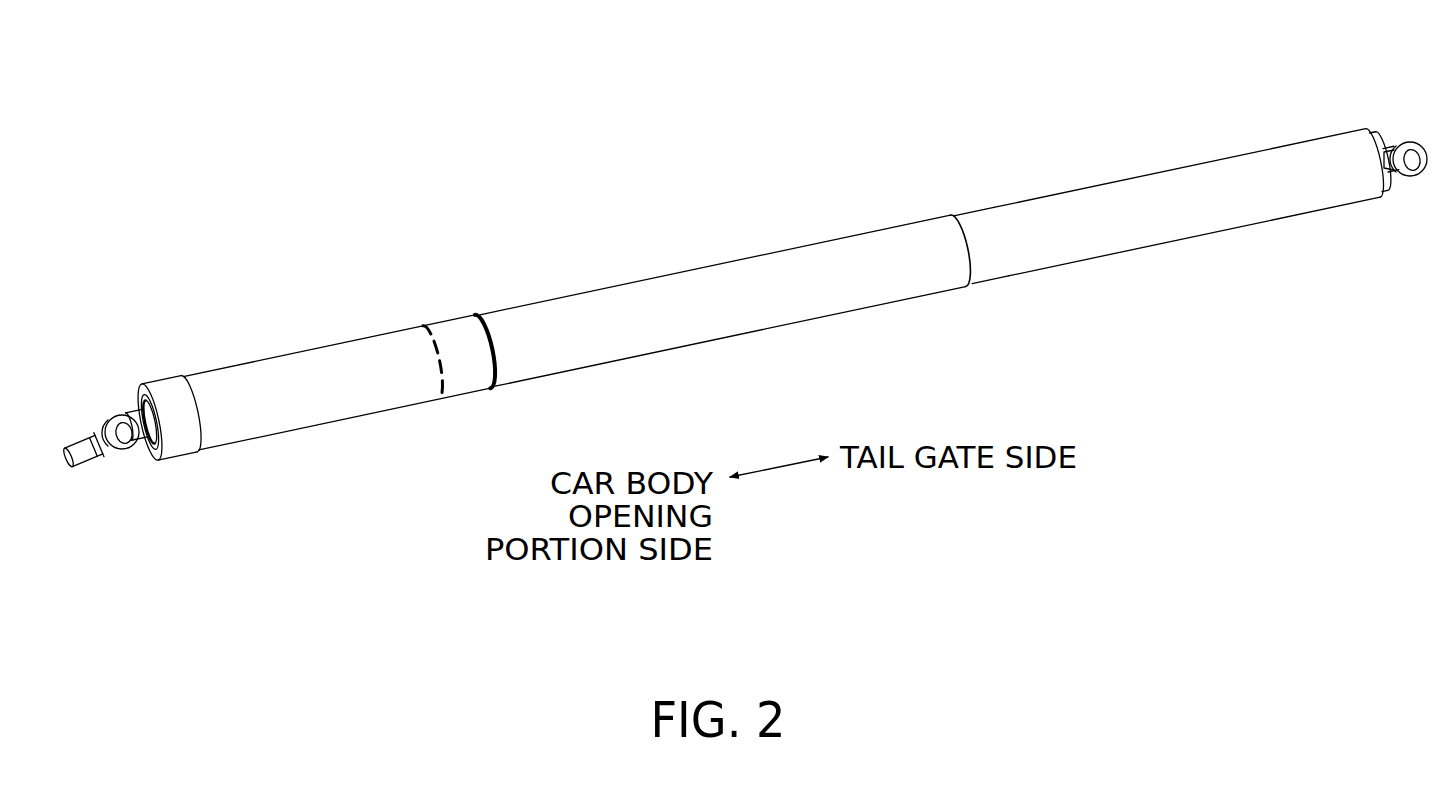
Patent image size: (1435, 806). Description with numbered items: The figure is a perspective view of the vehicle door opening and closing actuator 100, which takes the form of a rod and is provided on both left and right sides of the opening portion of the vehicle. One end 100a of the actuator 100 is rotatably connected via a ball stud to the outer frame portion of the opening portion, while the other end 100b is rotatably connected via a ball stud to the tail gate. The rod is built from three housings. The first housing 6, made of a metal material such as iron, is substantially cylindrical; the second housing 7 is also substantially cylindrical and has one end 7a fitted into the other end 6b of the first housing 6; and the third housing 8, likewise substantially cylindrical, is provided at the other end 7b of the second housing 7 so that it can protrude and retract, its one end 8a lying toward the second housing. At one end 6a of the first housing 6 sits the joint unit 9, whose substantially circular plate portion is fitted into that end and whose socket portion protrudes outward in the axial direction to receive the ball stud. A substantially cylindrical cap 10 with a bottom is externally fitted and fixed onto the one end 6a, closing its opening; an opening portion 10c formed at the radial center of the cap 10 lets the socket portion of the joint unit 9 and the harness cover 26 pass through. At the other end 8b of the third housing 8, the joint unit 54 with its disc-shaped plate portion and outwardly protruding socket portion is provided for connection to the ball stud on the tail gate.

The actuator 100 is at (798, 152).
The one end of the actuator 100a is at (124, 412).
The other end of the actuator 100b is at (1399, 141).
The first housing 6 is at (322, 348).
The one end of the first housing 6a is at (200, 462).
The other end of the first housing 6b is at (488, 396).
The second housing 7 is at (706, 262).
The one end of the second housing 7a is at (489, 314).
The other end of the second housing 7b is at (951, 290).
The third housing 8 is at (1141, 172).
The one end of the third housing 8a is at (982, 287).
The other end of the third housing 8b is at (1373, 200).
The joint unit 9 is at (145, 470).
The cap 10 is at (166, 372).
The opening portion 10c is at (140, 405).
The harness cover 26 is at (107, 470).
The joint unit 54 is at (1408, 186).